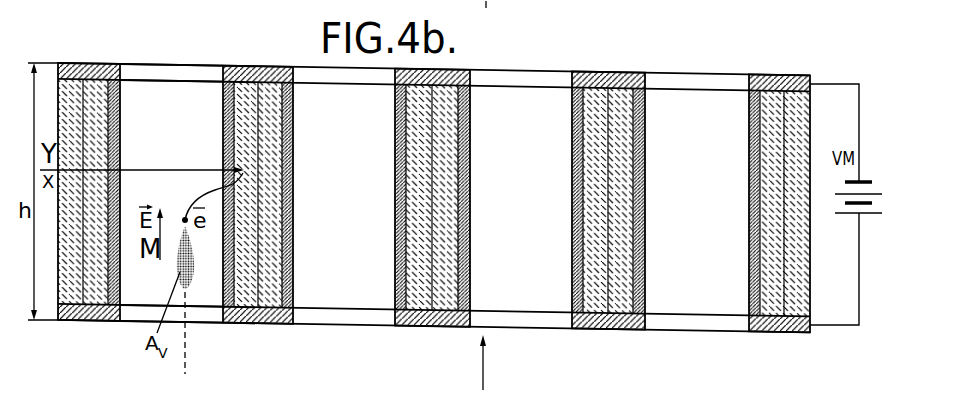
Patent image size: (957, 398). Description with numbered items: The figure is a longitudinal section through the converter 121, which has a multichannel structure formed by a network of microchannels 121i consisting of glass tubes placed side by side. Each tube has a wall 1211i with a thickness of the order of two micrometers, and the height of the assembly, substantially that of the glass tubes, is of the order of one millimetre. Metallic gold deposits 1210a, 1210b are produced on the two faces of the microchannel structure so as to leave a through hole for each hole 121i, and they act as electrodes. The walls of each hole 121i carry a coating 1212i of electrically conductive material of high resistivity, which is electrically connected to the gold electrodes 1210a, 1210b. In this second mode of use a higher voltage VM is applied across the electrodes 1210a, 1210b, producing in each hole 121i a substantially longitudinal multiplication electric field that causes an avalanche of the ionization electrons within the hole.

The converter 121 is at (606, 65).
The microchannel 121i is at (173, 107).
The wall of the glass tube 1211i is at (88, 85).
The coating 1212i is at (118, 100).
The metallic gold deposit 1210a is at (780, 78).
The metallic gold deposit 1210b is at (784, 330).